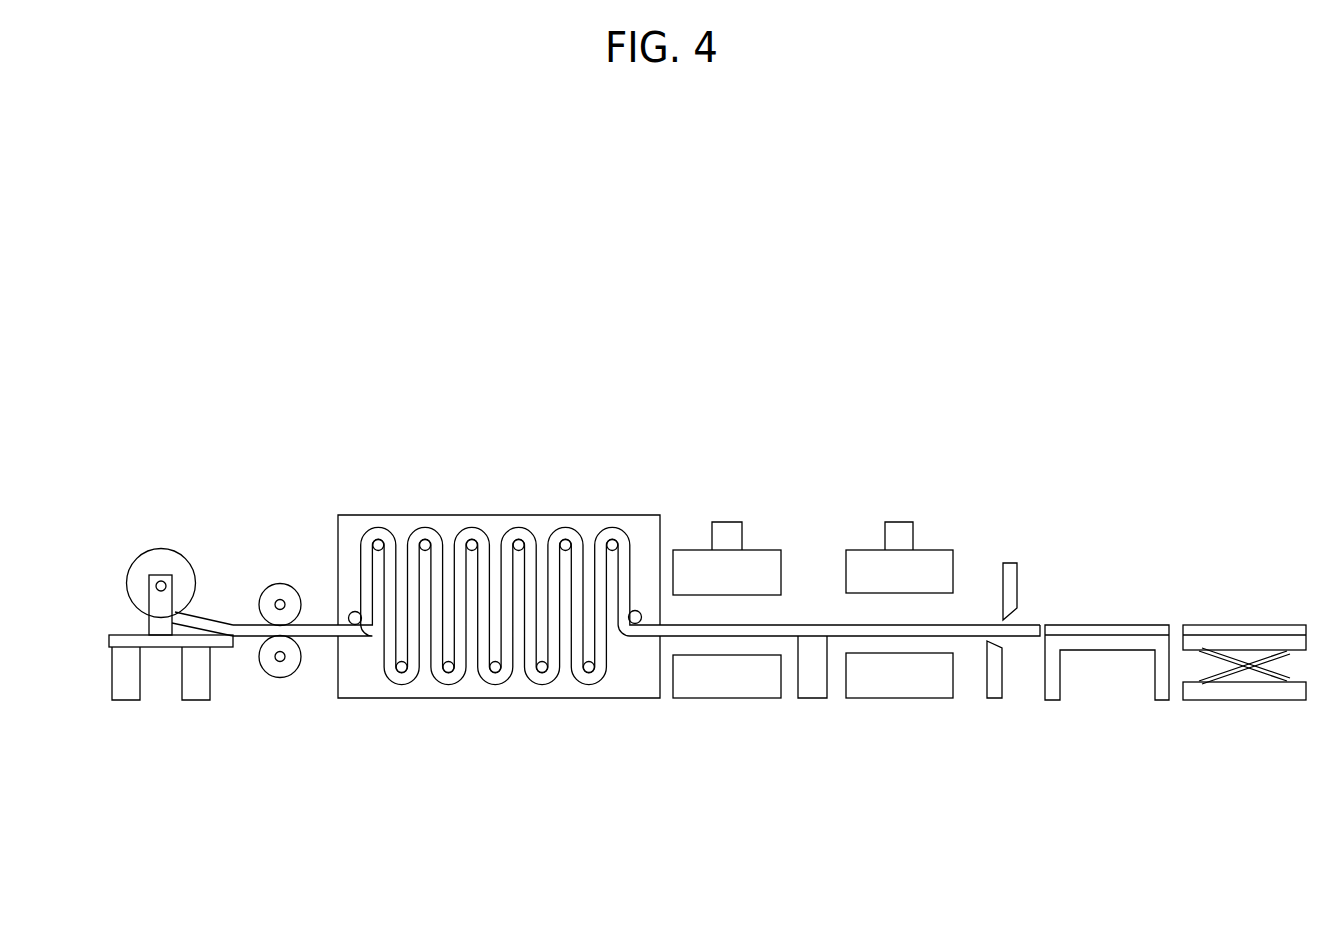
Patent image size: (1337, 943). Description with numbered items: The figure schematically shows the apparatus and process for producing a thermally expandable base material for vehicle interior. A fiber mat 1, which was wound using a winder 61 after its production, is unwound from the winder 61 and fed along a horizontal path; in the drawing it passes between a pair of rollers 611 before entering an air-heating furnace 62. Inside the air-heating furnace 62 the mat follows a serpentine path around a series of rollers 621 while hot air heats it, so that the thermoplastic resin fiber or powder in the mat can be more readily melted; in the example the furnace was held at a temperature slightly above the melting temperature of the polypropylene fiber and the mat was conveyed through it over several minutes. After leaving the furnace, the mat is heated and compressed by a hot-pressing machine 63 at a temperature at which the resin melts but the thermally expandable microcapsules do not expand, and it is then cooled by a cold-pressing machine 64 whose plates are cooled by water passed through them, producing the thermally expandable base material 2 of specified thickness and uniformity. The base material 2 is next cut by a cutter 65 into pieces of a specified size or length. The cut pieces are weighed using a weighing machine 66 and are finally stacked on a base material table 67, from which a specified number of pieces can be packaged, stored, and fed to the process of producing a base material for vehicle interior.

The fiber mat 1 is at (180, 552).
The thermally expandable base material for vehicle interior 2 is at (965, 637).
The winder 61 is at (162, 626).
The feed rollers 611 is at (280, 583).
The air-heating furnace 62 is at (437, 504).
The guide rollers 621 is at (426, 540).
The hot-pressing machine 63 is at (774, 532).
The cold-pressing machine 64 is at (937, 537).
The cutter 65 is at (1024, 580).
The weighing machine 66 is at (1116, 716).
The base material table 67 is at (1251, 716).